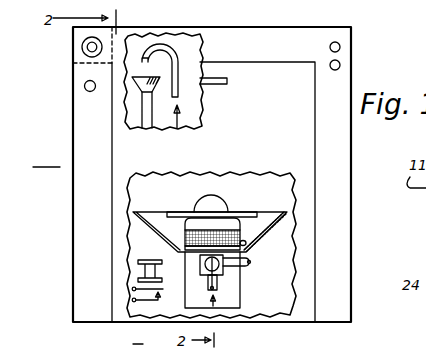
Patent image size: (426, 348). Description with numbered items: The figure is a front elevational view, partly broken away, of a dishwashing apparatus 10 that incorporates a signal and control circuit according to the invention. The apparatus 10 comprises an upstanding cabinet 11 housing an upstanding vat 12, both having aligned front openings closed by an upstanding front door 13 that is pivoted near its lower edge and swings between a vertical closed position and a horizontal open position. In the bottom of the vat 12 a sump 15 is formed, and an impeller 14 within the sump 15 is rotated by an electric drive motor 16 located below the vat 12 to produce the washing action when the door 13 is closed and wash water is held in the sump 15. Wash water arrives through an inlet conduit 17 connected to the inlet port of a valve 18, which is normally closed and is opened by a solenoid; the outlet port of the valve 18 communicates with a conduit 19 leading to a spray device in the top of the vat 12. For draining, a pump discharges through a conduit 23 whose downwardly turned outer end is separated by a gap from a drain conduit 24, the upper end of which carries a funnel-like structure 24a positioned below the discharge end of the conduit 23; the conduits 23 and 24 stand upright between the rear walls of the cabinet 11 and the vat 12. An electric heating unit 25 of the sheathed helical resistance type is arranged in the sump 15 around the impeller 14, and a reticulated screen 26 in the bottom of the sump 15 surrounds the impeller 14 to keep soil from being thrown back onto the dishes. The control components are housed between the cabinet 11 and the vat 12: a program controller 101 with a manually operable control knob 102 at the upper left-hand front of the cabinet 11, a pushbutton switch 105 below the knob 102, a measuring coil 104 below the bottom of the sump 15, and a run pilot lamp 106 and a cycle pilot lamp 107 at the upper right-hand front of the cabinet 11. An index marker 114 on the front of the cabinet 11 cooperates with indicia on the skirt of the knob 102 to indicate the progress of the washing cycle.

The dishwashing apparatus 10 is at (46, 156).
The cabinet 11 is at (333, 165).
The vat 12 is at (133, 211).
The front door 13 is at (305, 133).
The impeller 14 is at (205, 207).
The sump 15 is at (162, 211).
The electric drive motor 16 is at (232, 302).
The inlet conduit 17 is at (211, 285).
The valve 18 is at (221, 271).
The conduit 19 is at (250, 264).
The conduit 23 is at (176, 52).
The drain conduit 24 is at (143, 122).
The funnel-like structure 24a is at (138, 86).
The electric heating unit 25 is at (255, 211).
The reticulated screen 26 is at (246, 244).
The program controller 101 is at (80, 42).
The control knob 102 is at (84, 49).
The measuring coil 104 is at (147, 272).
The pushbutton switch 105 is at (84, 86).
The run pilot lamp 106 is at (340, 47).
The cycle pilot lamp 107 is at (340, 65).
The index marker 114 is at (126, 345).